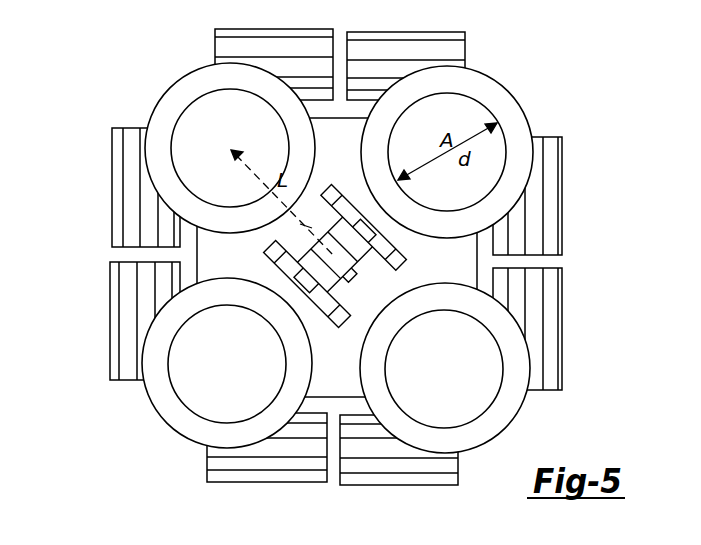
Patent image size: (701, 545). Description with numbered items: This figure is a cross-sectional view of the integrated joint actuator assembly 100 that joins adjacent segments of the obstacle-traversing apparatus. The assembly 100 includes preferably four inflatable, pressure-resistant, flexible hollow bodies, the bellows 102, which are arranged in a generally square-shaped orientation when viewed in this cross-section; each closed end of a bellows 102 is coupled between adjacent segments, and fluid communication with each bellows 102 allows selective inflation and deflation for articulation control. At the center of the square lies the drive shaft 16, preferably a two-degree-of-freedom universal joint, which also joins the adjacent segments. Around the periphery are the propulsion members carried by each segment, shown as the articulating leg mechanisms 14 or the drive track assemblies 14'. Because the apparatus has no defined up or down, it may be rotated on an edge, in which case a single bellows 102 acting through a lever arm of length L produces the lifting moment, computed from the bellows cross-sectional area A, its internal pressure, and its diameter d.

The integrated joint actuator assembly 100 is at (74, 129).
The bellows 102 is at (154, 110).
The articulating leg mechanisms 14 is at (336, 209).
The drive track assemblies 14' is at (332, 470).
The drive shaft 16 is at (380, 272).